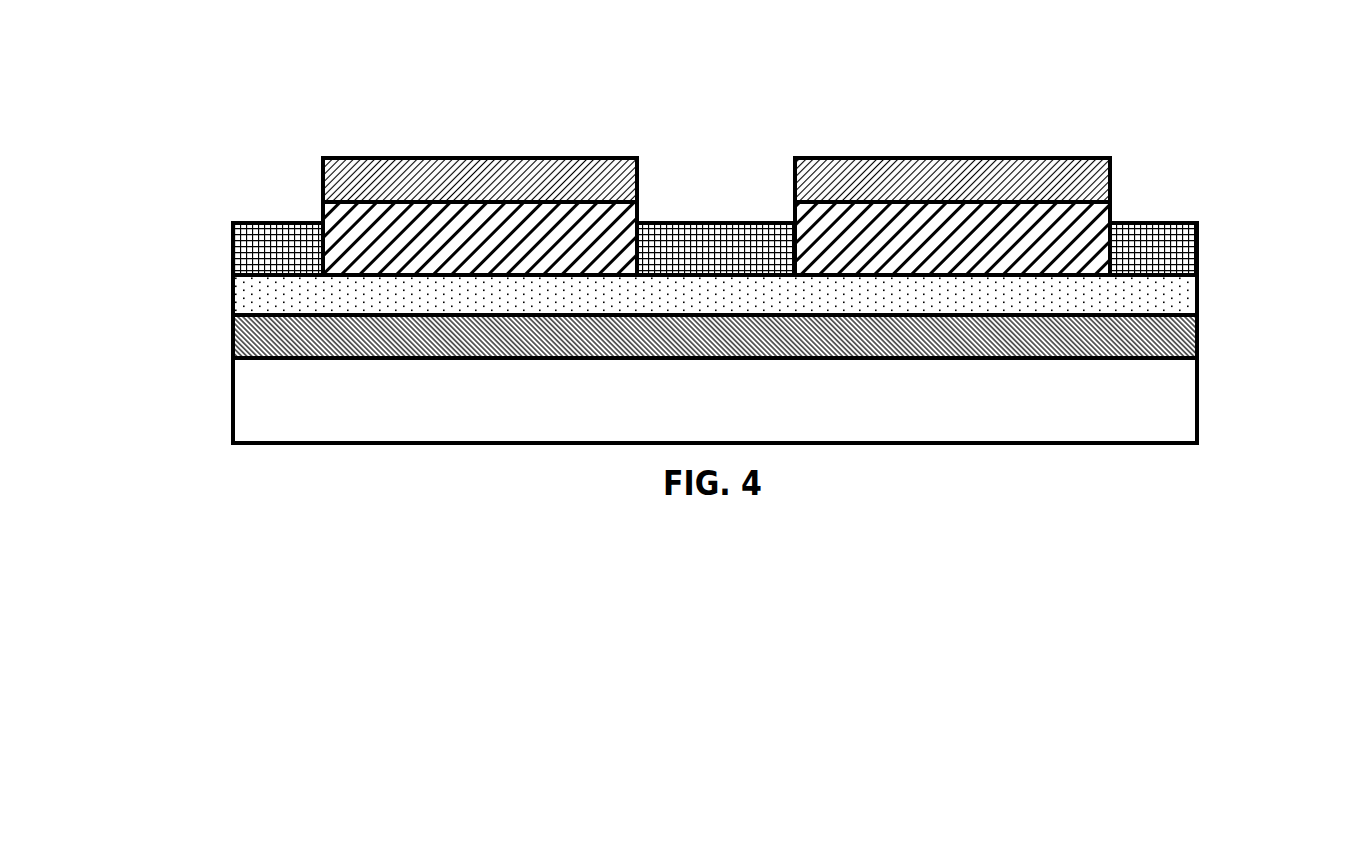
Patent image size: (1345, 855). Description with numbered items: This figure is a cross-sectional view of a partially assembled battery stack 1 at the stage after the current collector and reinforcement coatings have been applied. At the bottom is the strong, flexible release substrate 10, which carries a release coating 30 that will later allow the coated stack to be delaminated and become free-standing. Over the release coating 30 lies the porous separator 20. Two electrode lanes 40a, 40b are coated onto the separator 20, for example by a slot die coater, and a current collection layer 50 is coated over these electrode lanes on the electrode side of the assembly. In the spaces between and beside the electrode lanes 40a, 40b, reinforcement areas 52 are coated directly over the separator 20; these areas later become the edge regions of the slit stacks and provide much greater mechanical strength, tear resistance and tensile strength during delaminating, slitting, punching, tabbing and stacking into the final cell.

The battery stack 1 is at (1197, 83).
The substrate 10 is at (1197, 398).
The separator 20 is at (1197, 298).
The release coating 30 is at (1197, 345).
The electrode lane 40a is at (352, 227).
The electrode lane 40b is at (1107, 212).
The current collection layer 50 is at (793, 159).
The reinforcement areas 52 is at (257, 258).